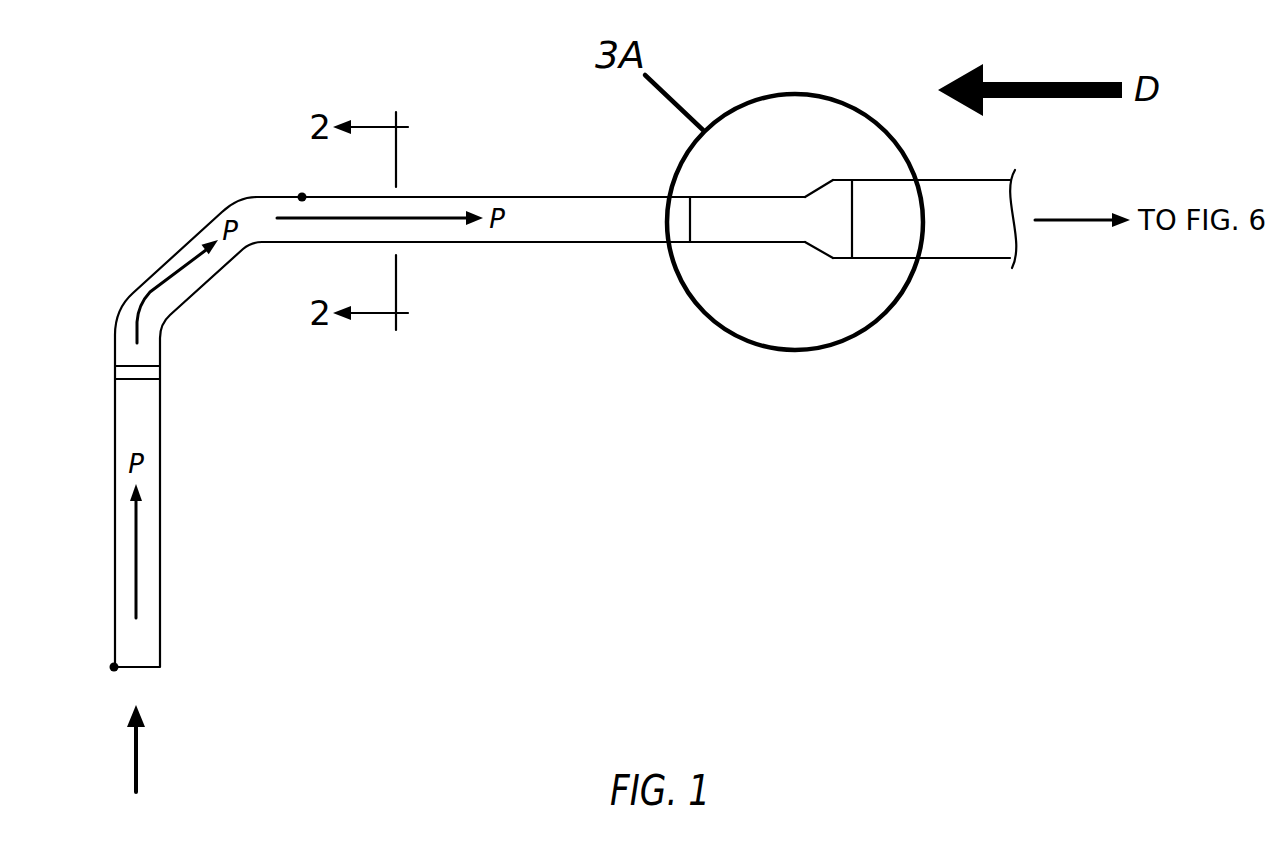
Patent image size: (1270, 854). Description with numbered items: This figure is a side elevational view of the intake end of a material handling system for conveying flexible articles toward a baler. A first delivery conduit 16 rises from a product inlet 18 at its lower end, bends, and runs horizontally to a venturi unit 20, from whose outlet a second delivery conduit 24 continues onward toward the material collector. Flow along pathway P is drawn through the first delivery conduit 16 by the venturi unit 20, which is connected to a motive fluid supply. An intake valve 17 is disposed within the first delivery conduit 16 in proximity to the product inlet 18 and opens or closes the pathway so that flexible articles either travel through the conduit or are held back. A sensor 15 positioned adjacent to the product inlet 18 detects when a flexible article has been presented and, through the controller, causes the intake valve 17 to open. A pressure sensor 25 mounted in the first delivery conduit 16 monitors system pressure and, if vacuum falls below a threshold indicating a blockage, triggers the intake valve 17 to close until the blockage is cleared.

The sensor 15 is at (114, 667).
The first delivery conduit 16 is at (480, 207).
The intake valve 17 is at (160, 372).
The product inlet 18 is at (148, 667).
The venturi unit 20 is at (788, 262).
The second delivery conduit 24 is at (960, 240).
The pressure sensor 25 is at (302, 197).